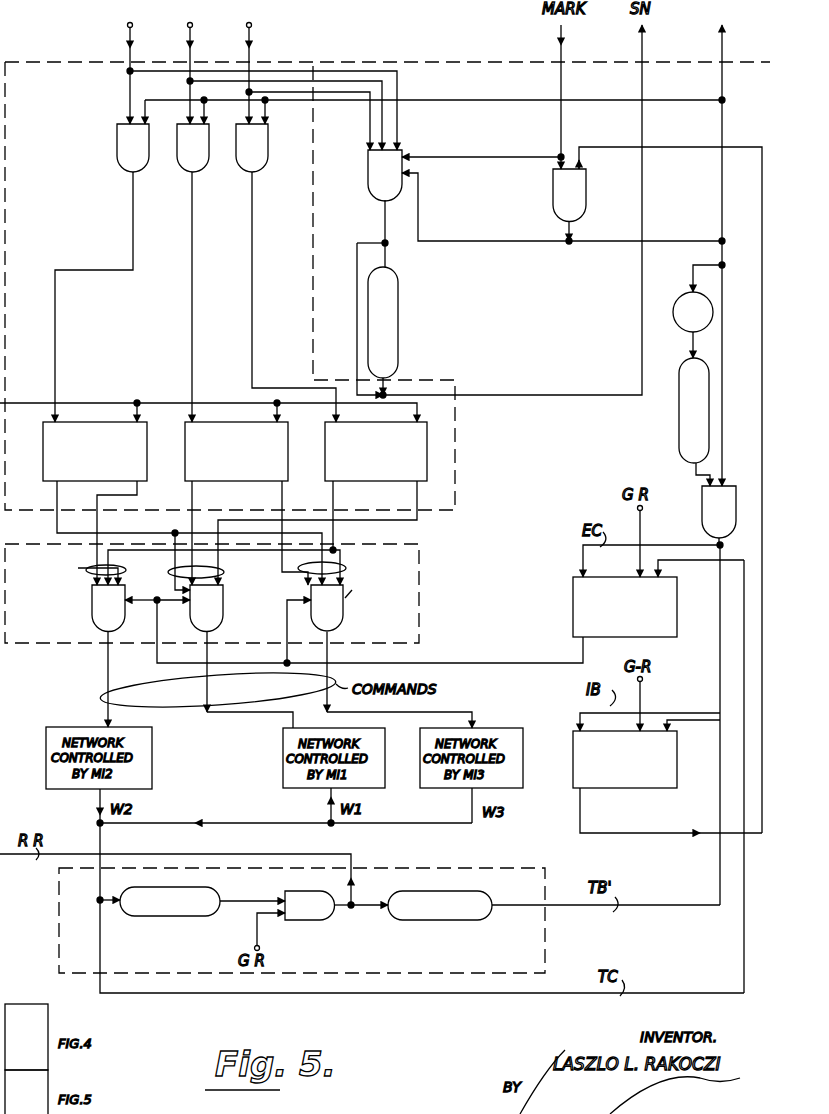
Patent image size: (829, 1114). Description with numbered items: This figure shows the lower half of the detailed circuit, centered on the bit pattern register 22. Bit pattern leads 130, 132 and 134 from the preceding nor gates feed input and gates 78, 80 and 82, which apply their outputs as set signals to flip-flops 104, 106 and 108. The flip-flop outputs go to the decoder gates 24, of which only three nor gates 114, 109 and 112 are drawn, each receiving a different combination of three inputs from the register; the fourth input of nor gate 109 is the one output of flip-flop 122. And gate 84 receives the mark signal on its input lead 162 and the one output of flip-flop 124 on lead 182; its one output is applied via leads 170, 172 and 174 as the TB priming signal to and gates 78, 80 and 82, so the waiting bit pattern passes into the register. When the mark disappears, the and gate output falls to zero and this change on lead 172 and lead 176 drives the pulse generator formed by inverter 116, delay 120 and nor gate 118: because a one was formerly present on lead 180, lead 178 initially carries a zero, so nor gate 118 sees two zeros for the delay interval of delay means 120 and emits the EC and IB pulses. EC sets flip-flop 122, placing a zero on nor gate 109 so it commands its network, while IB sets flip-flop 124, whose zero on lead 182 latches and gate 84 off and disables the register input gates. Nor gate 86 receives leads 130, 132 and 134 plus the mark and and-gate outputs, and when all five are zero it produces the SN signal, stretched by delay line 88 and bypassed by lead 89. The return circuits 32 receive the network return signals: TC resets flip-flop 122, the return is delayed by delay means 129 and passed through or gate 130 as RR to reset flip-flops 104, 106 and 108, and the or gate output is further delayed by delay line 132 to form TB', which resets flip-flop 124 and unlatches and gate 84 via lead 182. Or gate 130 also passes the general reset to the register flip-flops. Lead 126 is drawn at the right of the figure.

The bit pattern register 22 is at (387, 286).
The decoder gates 24 is at (419, 572).
The circuits for sensing the return 32 is at (495, 868).
The and gate 78 is at (117, 140).
The and gate 80 is at (180, 170).
The and gate 82 is at (240, 170).
The and gate 84 is at (553, 194).
The nor gate 86 is at (372, 197).
The delay line 88 is at (398, 300).
The lead 89 is at (357, 248).
The flip-flop 104 is at (50, 481).
The flip-flop 106 is at (185, 473).
The flip-flop 108 is at (325, 473).
The nor gate 109 is at (223, 610).
The nor gate 112 is at (343, 615).
The nor gate 114 is at (92, 612).
The inverter 116 is at (680, 288).
The nor gate 118 is at (702, 518).
The delay means 120 is at (679, 428).
The flip-flop 122 is at (650, 637).
The flip-flop 124 is at (640, 788).
The line 126 is at (696, 150).
The delay means 129 is at (180, 916).
The or gate 130 is at (305, 940).
The delay line 132 is at (440, 940).
The lead 134 is at (250, 62).
The input lead 162 is at (563, 155).
The lead 170 is at (668, 241).
The lead 172 is at (723, 207).
The lead 174 is at (462, 102).
The lead 176 is at (724, 300).
The lead 178 is at (692, 470).
The lead 180 is at (690, 270).
The output lead 182 is at (618, 838).